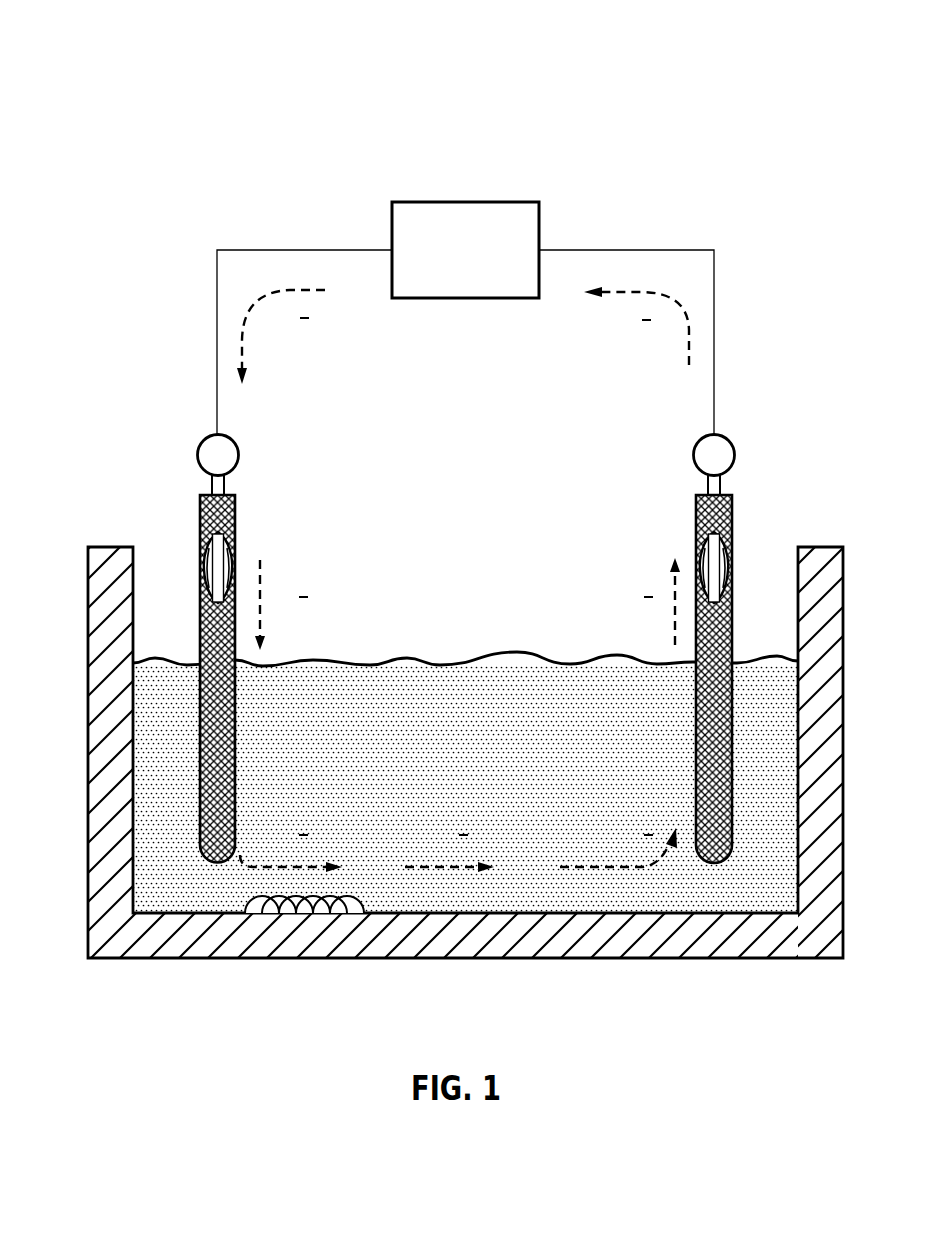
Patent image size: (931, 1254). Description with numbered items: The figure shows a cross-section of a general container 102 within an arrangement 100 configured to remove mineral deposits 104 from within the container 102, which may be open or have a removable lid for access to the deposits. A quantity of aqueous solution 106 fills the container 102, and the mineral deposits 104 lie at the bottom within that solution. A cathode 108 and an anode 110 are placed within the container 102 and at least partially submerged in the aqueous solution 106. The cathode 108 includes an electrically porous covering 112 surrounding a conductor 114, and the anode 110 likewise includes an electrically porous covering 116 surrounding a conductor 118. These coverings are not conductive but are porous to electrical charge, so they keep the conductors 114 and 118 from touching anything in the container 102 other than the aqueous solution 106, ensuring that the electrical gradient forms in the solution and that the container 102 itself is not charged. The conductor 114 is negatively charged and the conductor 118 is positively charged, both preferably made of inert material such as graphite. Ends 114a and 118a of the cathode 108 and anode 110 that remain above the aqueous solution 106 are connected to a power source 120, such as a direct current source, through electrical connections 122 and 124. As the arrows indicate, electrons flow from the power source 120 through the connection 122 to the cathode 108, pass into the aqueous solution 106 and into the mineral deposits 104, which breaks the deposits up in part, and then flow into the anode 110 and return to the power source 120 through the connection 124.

The arrangement 100 is at (163, 40).
The container 102 is at (88, 557).
The mineral deposits 104 is at (263, 908).
The aqueous solution 106 is at (392, 678).
The cathode 108 is at (213, 629).
The anode 110 is at (718, 629).
The electrically porous covering 112 is at (235, 528).
The conductor 114 is at (200, 555).
The end 114a is at (232, 440).
The electrically porous covering 116 is at (697, 528).
The conductor 118 is at (732, 555).
The end 118a is at (700, 440).
The power source 120 is at (421, 202).
The electrical connection 122 is at (217, 278).
The electrical connection 124 is at (714, 278).